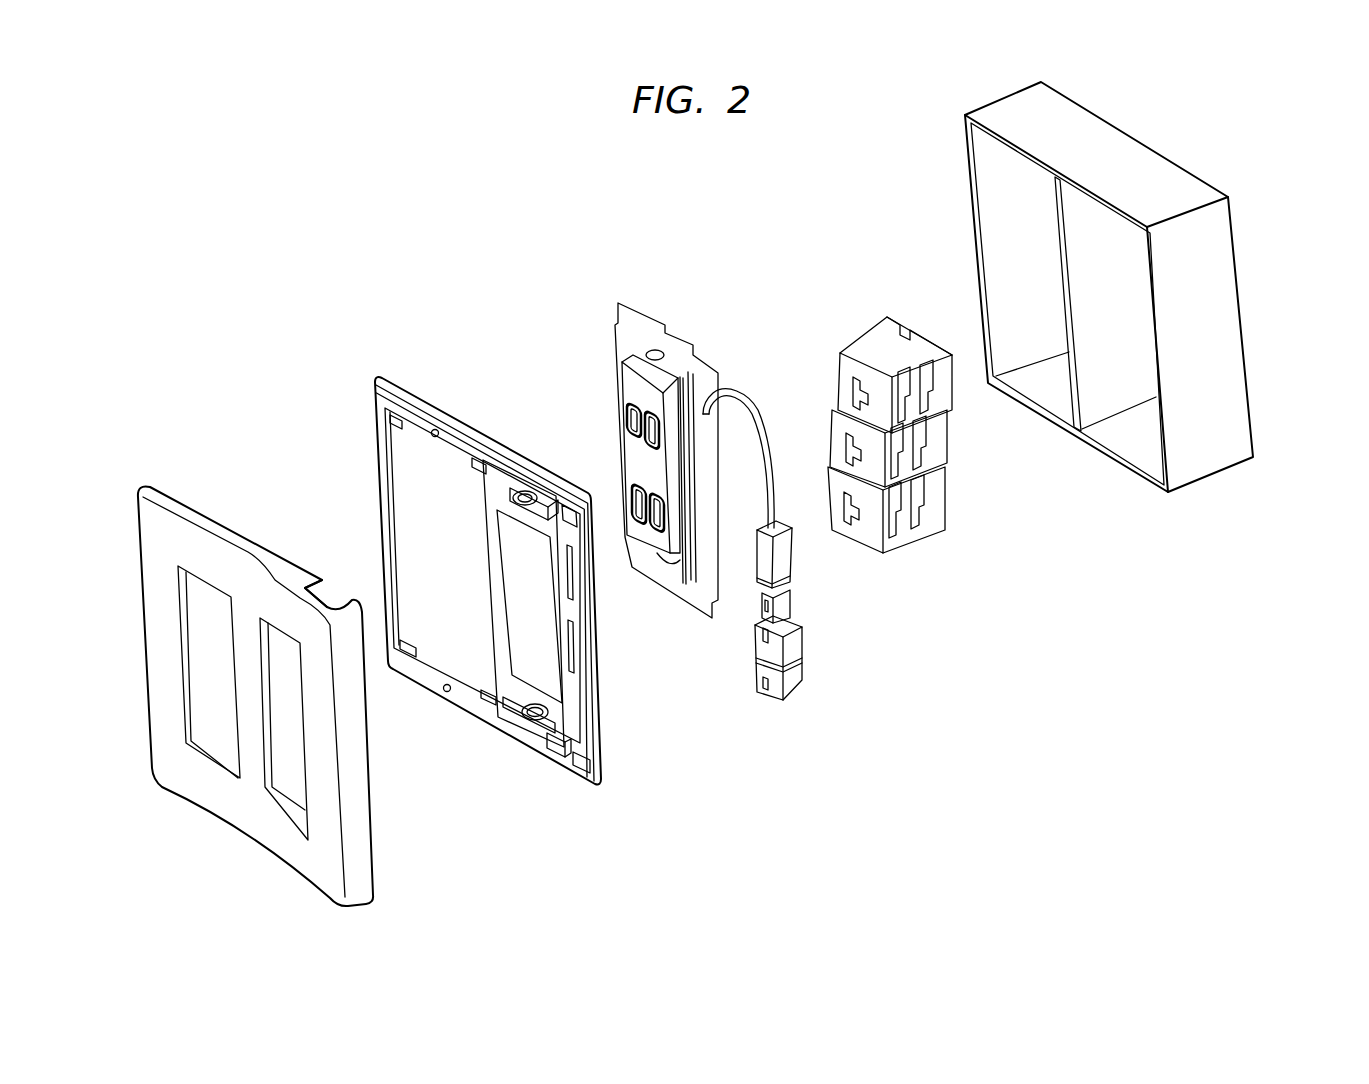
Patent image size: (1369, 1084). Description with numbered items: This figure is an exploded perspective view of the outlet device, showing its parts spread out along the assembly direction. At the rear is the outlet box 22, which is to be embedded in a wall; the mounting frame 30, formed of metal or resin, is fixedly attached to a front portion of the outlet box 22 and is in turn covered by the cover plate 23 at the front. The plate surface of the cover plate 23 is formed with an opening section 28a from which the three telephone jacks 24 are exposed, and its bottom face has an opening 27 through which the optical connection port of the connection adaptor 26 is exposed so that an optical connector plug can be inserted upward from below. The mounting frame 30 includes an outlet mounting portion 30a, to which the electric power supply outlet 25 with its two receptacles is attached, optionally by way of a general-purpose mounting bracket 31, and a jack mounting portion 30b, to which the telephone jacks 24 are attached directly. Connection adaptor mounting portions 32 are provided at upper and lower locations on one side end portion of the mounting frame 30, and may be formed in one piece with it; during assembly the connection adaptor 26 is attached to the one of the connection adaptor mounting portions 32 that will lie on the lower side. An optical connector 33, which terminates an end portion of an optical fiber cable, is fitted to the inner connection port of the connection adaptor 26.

The outlet box 22 is at (1043, 417).
The cover plate 23 is at (210, 524).
The telephone jacks 24 is at (836, 347).
The electric power supply outlet 25 is at (632, 390).
The connection adaptor 26 is at (793, 647).
The opening 27 is at (339, 598).
The opening section 28a is at (212, 763).
The mounting frame 30 is at (480, 709).
The outlet mounting portion 30a is at (435, 442).
The jack mounting portion 30b is at (504, 604).
The mounting bracket 31 is at (682, 583).
The connection adaptor mounting portions 32 is at (550, 757).
The optical connector 33 is at (763, 430).